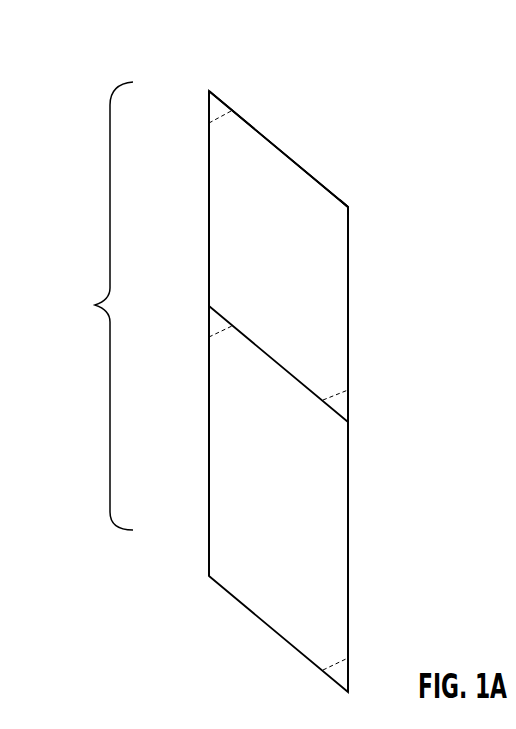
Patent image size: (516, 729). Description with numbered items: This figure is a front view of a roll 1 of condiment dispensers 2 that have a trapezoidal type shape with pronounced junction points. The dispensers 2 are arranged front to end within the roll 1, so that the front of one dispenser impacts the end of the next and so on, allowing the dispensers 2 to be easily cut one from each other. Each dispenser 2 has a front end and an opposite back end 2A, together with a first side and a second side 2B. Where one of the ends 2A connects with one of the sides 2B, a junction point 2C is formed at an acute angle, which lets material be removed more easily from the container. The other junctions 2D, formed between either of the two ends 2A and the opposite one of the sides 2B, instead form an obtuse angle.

The roll 1 is at (103, 306).
The dispenser 2 is at (378, 327).
The end 2A is at (302, 153).
The side 2B is at (207, 212).
The junction point 2C is at (233, 110).
The junction 2D is at (357, 202).